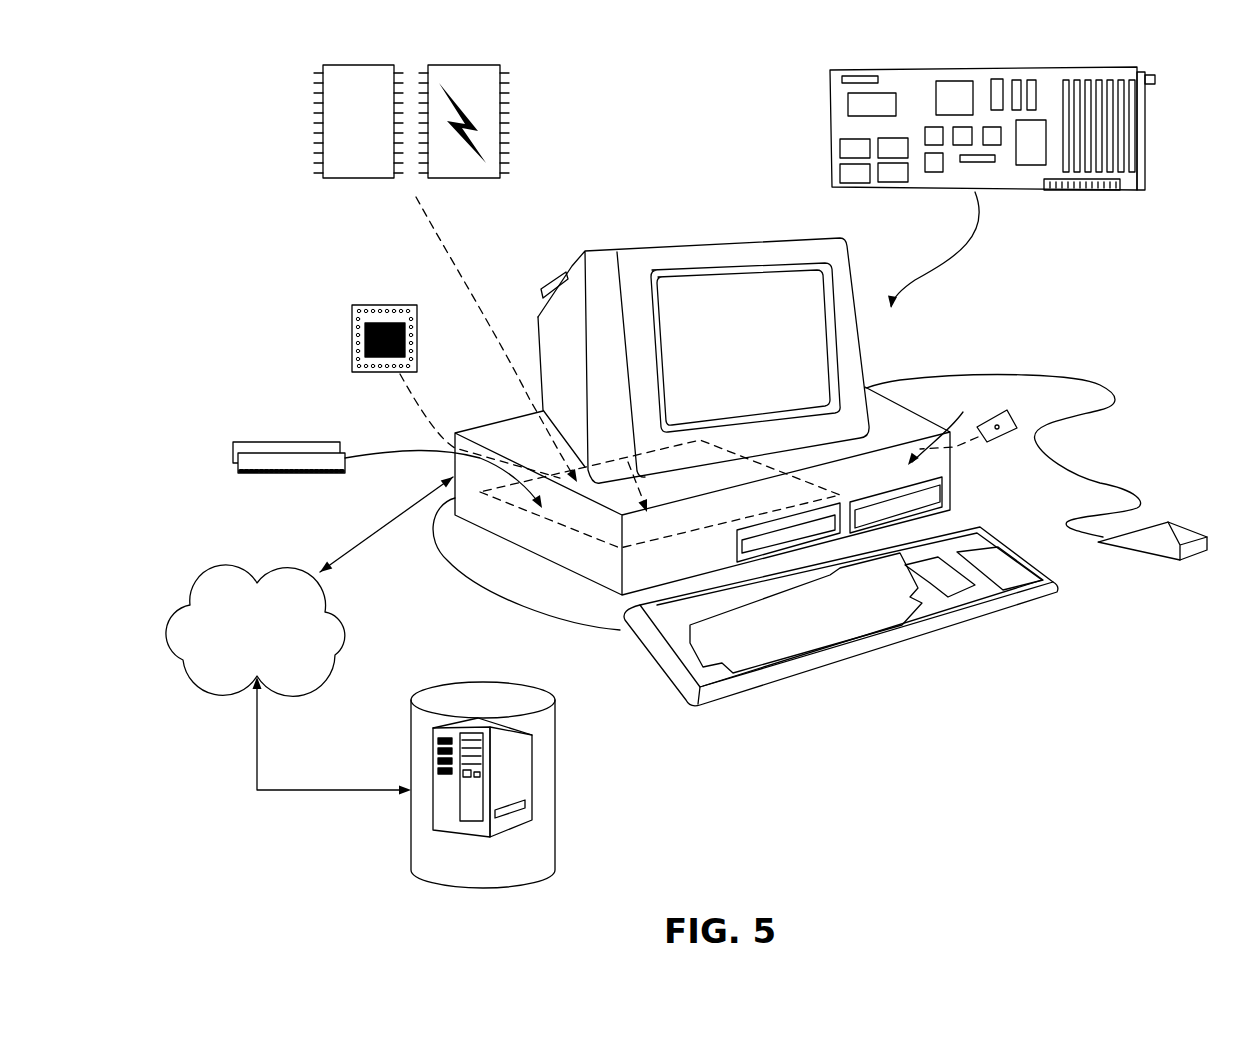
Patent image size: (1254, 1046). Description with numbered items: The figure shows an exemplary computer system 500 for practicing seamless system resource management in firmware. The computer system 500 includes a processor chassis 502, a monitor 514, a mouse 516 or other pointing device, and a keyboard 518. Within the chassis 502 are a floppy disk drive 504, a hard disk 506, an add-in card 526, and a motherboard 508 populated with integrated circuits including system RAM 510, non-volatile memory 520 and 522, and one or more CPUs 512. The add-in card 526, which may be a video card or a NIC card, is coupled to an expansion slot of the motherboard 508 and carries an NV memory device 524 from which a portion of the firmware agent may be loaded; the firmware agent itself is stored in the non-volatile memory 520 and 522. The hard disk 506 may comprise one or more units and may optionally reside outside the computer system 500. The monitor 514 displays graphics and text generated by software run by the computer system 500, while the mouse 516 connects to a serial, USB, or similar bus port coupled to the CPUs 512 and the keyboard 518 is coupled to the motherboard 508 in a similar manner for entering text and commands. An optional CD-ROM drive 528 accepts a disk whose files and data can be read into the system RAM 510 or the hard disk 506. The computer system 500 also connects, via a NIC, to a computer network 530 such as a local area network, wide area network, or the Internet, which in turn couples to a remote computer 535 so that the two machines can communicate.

The computer system 500 is at (843, 534).
The processor chassis 502 is at (955, 448).
The floppy disk drive 504 is at (949, 424).
The hard disk 506 is at (921, 498).
The motherboard 508 is at (563, 527).
The system RAM 510 is at (260, 448).
The CPU 512 is at (417, 357).
The monitor 514 is at (853, 303).
The mouse 516 is at (1185, 558).
The keyboard 518 is at (943, 630).
The non-volatile memory 520 is at (358, 168).
The non-volatile memory 522 is at (470, 168).
The NV memory device 524 is at (856, 104).
The add-in card 526 is at (985, 187).
The CD-ROM drive 528 is at (736, 548).
The computer network 530 is at (297, 675).
The remote computer 535 is at (555, 748).